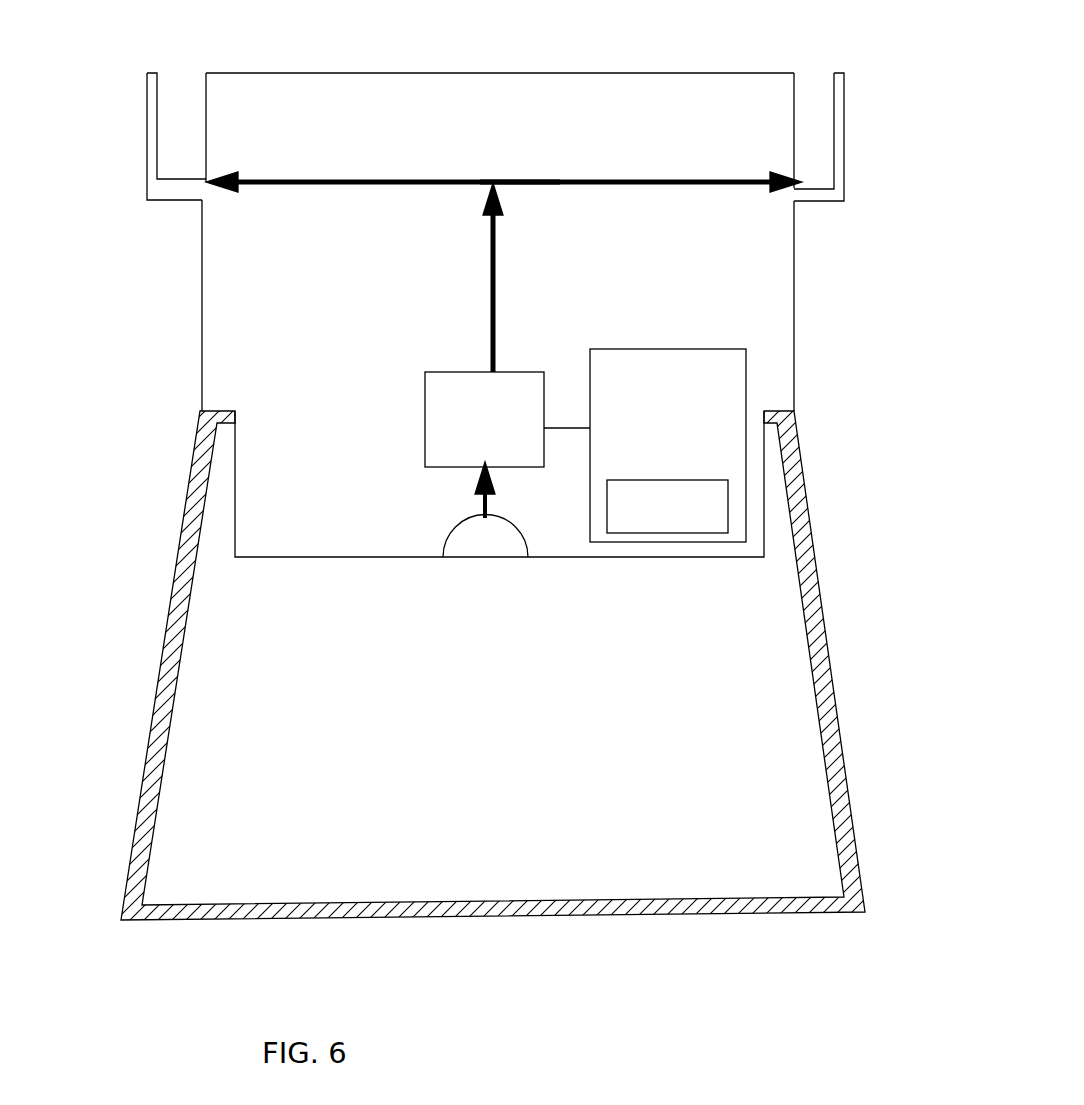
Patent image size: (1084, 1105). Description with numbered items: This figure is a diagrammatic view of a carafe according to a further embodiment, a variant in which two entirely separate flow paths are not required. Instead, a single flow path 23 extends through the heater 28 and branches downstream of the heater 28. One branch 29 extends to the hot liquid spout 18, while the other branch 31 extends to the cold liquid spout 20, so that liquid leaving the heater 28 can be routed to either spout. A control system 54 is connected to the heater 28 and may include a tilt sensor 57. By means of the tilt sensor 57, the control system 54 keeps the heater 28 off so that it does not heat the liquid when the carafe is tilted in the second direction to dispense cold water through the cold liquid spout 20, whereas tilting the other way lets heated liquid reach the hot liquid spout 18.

The hot liquid spout 18 is at (147, 128).
The cold liquid spout 20 is at (845, 112).
The flow path 23 is at (457, 340).
The heater 28 is at (528, 383).
The branch 29 is at (378, 180).
The branch 31 is at (605, 180).
The control system 54 is at (737, 383).
The tilt sensor 57 is at (730, 507).